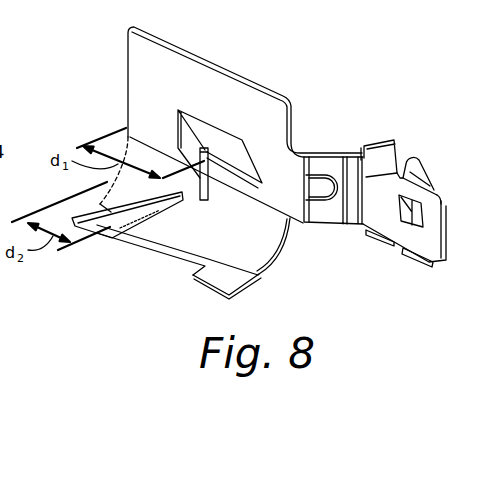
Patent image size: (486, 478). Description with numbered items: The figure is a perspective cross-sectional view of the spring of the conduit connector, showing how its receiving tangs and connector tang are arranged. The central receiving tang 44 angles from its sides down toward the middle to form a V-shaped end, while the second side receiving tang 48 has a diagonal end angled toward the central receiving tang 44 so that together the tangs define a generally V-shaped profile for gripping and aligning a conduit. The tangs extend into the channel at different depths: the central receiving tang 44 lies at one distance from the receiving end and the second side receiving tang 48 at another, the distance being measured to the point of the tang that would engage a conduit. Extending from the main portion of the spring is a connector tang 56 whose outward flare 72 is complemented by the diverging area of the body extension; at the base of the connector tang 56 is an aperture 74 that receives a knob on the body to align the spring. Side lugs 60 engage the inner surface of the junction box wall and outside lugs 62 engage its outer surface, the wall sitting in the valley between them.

The central receiving tang 44 is at (168, 205).
The second side receiving tang 48 is at (200, 128).
The connector tang 56 is at (426, 240).
The side lug 60 is at (420, 170).
The outside lug 62 is at (380, 150).
The outward flare 72 is at (324, 156).
The aperture 74 is at (319, 198).